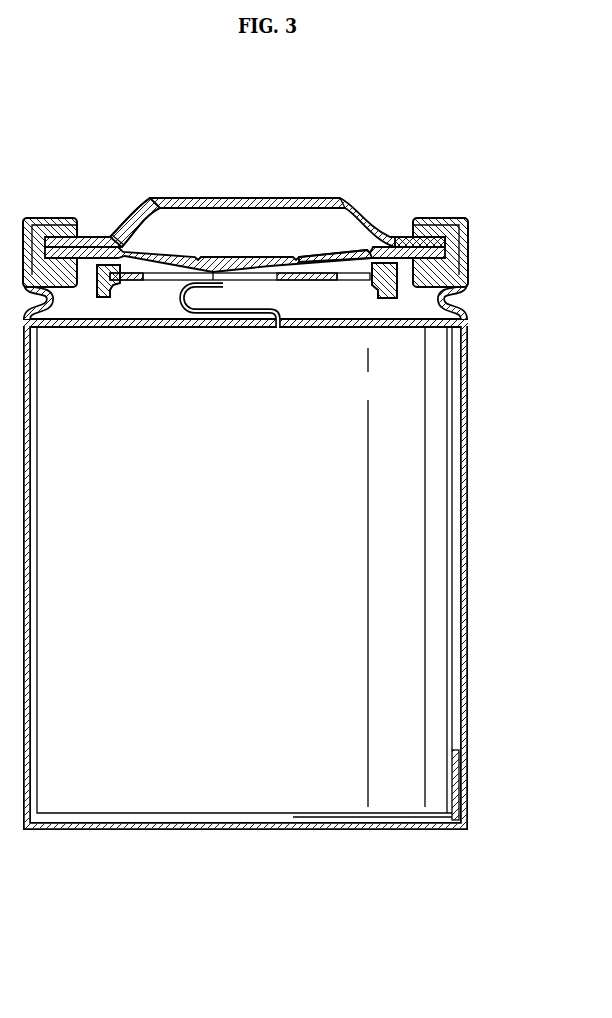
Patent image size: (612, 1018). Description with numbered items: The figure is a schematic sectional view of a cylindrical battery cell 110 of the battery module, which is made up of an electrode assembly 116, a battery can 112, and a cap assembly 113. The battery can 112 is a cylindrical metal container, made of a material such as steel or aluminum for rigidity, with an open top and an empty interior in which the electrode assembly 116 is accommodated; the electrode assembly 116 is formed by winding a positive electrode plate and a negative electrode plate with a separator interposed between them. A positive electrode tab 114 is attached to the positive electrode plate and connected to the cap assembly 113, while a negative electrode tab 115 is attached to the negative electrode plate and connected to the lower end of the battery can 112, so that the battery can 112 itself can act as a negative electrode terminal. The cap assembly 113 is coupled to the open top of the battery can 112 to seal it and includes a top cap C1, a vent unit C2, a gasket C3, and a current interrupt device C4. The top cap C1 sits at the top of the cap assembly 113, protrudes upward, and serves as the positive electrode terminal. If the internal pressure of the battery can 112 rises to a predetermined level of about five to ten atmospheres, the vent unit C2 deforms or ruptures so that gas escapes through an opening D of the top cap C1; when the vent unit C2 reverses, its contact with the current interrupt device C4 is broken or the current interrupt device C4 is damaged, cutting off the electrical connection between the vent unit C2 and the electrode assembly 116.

The cylindrical battery cell 110 is at (270, 448).
The battery can 112 is at (462, 458).
The cap assembly 113 is at (245, 193).
The positive electrode tab 114 is at (182, 297).
The negative electrode tab 115 is at (462, 780).
The electrode assembly 116 is at (438, 423).
The opening D is at (131, 214).
The top cap C1 is at (298, 199).
The vent unit C2 is at (332, 250).
The current interrupt device C4 is at (360, 254).
The gasket C3 is at (420, 202).